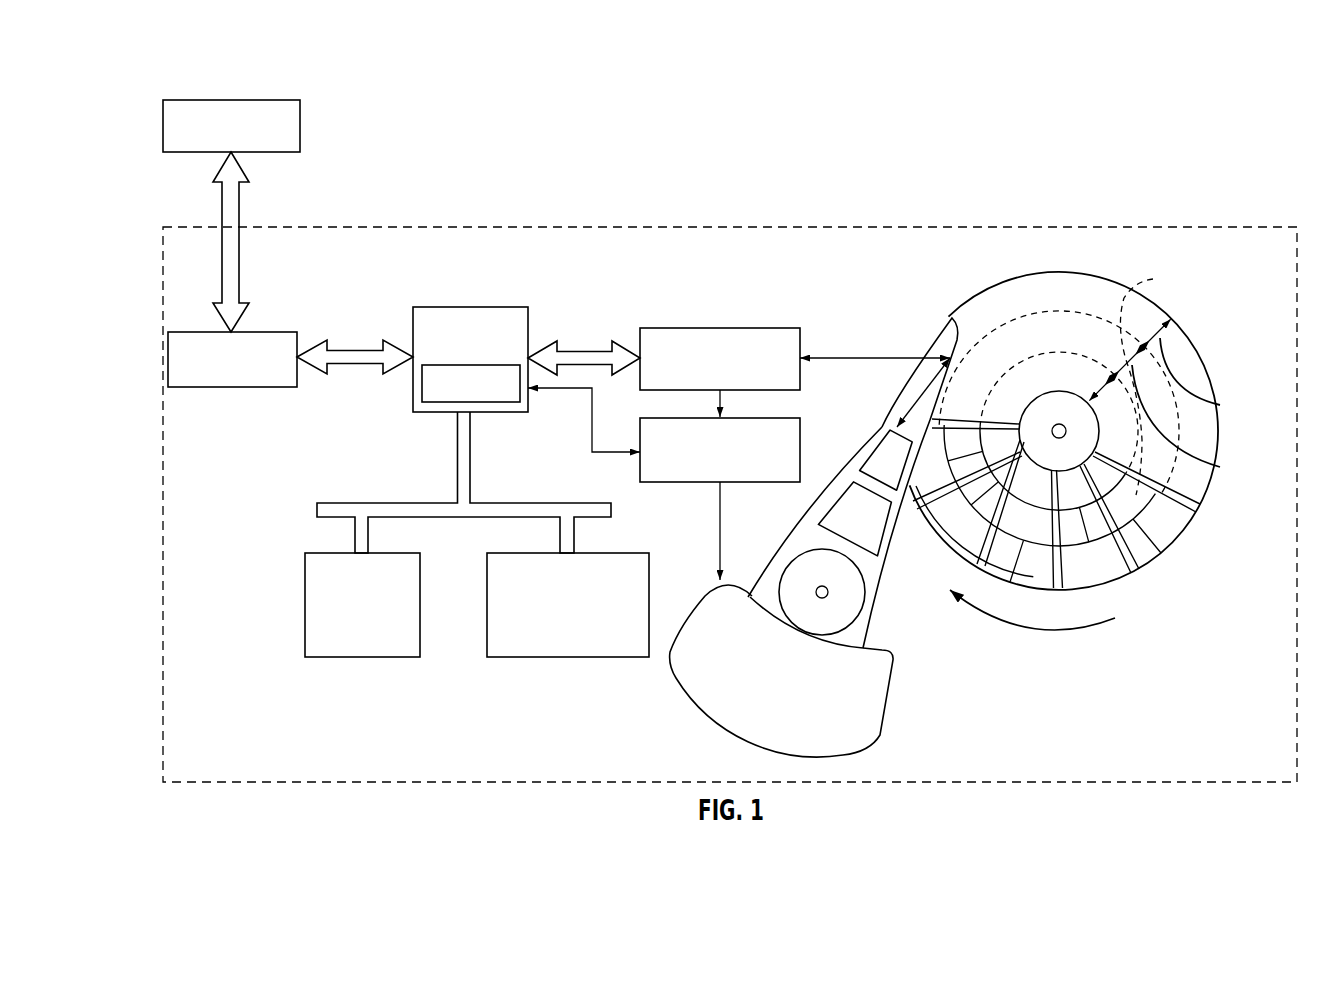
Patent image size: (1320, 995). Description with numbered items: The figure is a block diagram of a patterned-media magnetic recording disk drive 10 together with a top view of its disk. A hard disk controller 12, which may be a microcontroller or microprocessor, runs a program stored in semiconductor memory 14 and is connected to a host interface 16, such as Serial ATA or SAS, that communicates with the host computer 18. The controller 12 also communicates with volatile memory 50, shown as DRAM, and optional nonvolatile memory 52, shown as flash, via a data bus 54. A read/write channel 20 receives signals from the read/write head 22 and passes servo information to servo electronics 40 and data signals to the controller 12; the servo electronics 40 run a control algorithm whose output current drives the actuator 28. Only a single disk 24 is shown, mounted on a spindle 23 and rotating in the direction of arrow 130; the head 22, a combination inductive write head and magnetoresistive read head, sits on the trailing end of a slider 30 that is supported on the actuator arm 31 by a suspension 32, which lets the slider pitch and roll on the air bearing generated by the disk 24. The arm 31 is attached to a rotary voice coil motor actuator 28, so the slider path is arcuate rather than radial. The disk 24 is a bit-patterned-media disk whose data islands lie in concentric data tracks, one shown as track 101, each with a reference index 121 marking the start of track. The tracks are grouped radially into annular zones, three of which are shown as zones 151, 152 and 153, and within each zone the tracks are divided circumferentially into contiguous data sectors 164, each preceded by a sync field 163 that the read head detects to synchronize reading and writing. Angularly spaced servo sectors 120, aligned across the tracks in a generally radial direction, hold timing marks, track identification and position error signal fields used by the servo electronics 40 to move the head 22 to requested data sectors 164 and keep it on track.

The patterned-media magnetic recording disk drive (HDD) 10 is at (1263, 227).
The hard disk controller (HDC) 12 is at (437, 308).
The semiconductor memory 14 is at (437, 402).
The host interface 16 is at (208, 332).
The host computer 18 is at (205, 100).
The read/write channel 20 is at (689, 328).
The read/write head 22 is at (955, 345).
The spindle 23 is at (1059, 425).
The disk 24 is at (1022, 273).
The rotary voice coil motor (VCM) actuator 28 is at (712, 610).
The slider 30 is at (947, 357).
The actuator arm 31 is at (868, 446).
The suspension 32 is at (920, 406).
The servo electronics 40 is at (689, 418).
The volatile memory 50 is at (305, 560).
The nonvolatile memory 52 is at (650, 565).
The data bus 54 is at (362, 503).
The track 101 is at (1156, 382).
The servo sectors 120 is at (1117, 567).
The reference index 121 is at (1198, 510).
The arrow 130 is at (1065, 630).
The zone 151 is at (1220, 405).
The zone 152 is at (1221, 467).
The zone 153 is at (1103, 390).
The sync fields 163 is at (1148, 533).
The data sectors 164 is at (1176, 528).